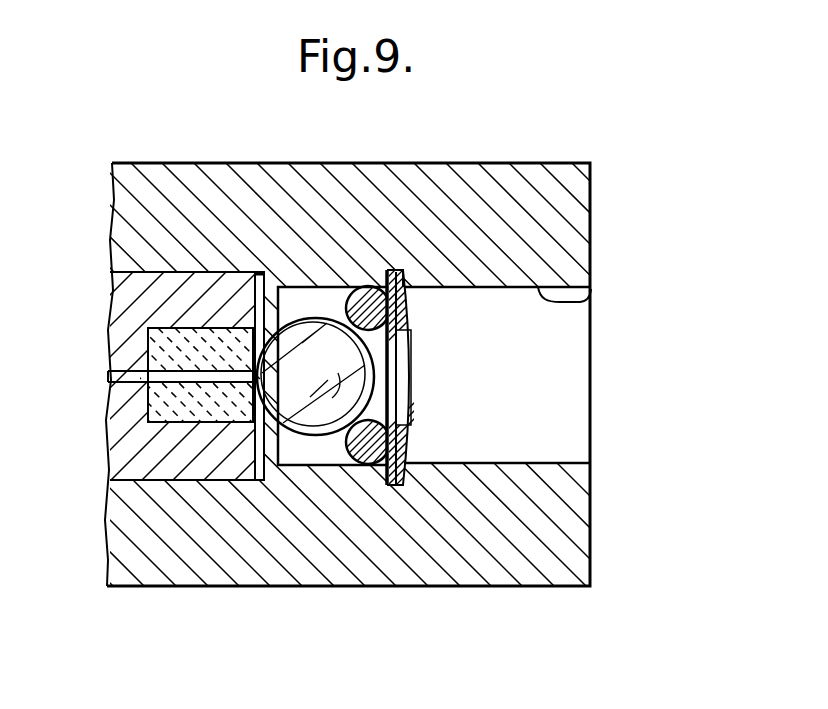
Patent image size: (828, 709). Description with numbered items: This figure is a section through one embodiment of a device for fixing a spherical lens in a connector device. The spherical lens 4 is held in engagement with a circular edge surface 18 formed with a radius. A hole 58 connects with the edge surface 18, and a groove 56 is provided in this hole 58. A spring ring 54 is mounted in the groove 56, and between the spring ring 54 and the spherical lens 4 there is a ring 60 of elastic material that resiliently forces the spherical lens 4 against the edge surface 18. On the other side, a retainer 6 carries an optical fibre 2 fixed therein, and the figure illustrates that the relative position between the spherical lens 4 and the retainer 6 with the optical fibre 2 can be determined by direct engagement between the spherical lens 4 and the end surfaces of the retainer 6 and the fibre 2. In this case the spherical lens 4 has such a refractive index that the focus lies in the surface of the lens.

The optical fibre 2 is at (178, 384).
The spherical lens 4 is at (352, 390).
The retainer 6 is at (175, 298).
The edge surface 18 is at (300, 325).
The spring ring 54 is at (404, 438).
The groove 56 is at (396, 270).
The hole 58 is at (591, 292).
The ring of elastic material 60 is at (372, 466).